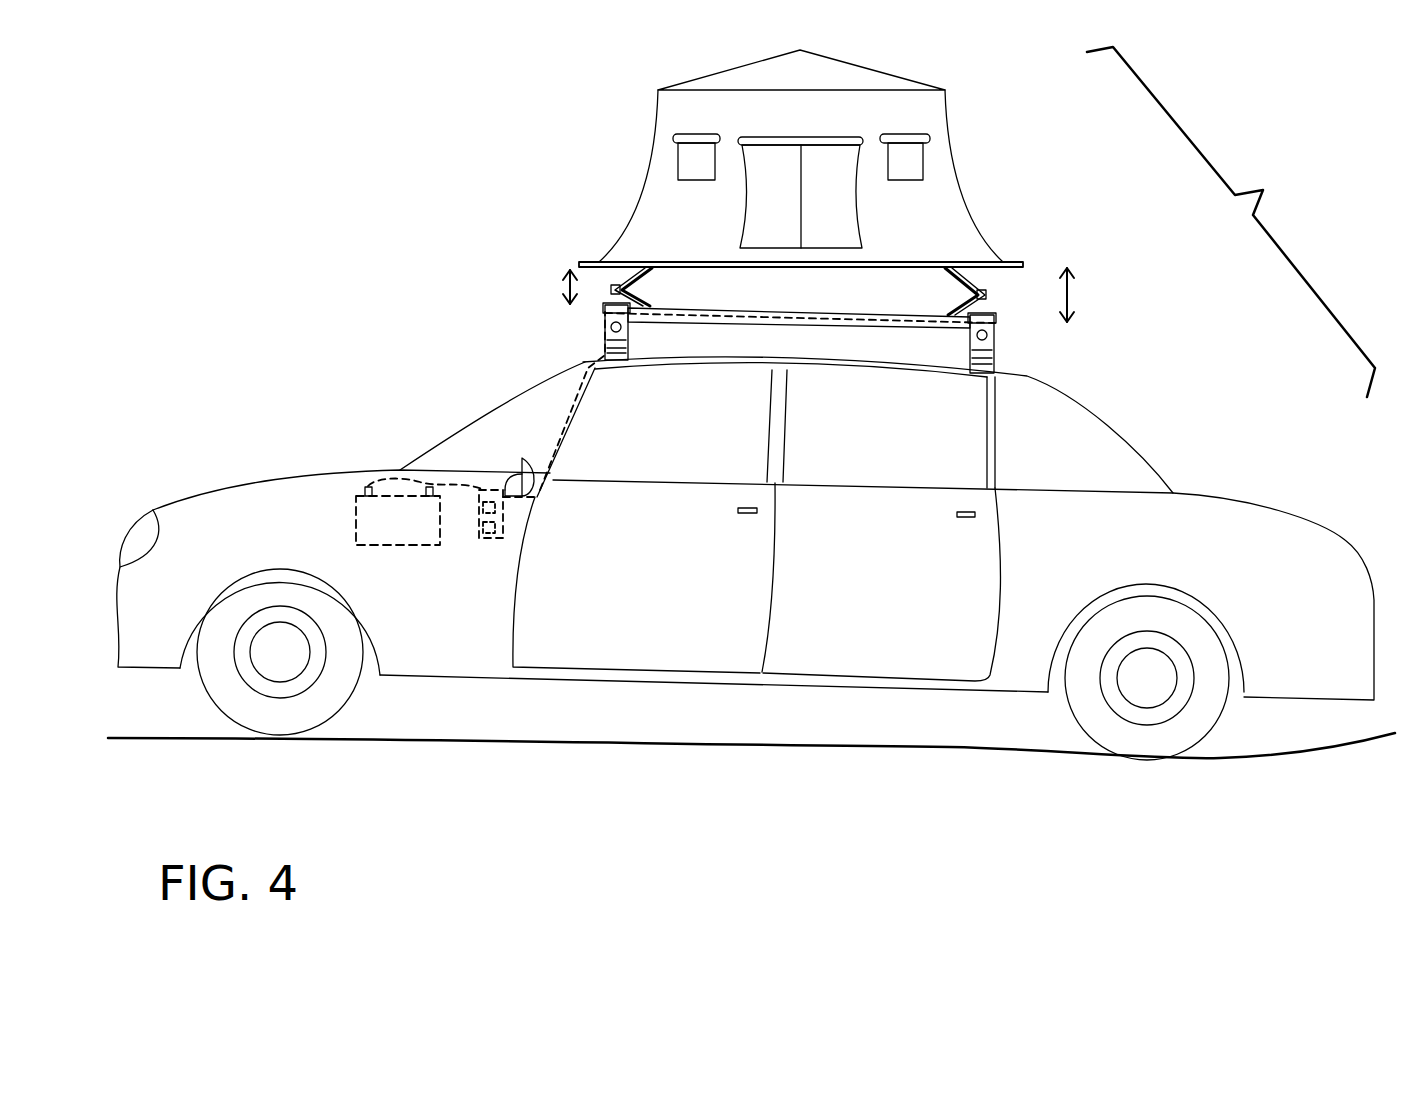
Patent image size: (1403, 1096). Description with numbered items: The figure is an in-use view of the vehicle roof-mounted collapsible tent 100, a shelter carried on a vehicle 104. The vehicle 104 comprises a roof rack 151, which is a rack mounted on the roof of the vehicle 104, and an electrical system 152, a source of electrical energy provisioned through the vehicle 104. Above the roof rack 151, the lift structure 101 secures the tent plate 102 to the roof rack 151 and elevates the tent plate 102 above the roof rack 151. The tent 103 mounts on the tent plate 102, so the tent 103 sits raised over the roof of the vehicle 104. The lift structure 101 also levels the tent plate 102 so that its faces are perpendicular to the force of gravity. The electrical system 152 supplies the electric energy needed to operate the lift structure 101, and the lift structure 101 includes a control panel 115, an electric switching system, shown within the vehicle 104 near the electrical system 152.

The vehicle roof-mounted collapsible tent 100 is at (1231, 222).
The lift structure 101 is at (960, 288).
The tent plate 102 is at (1005, 263).
The tent 103 is at (980, 197).
The vehicle 104 is at (1205, 513).
The control panel 115 is at (487, 538).
The roof rack 151 is at (993, 353).
The electrical system 152 is at (402, 537).